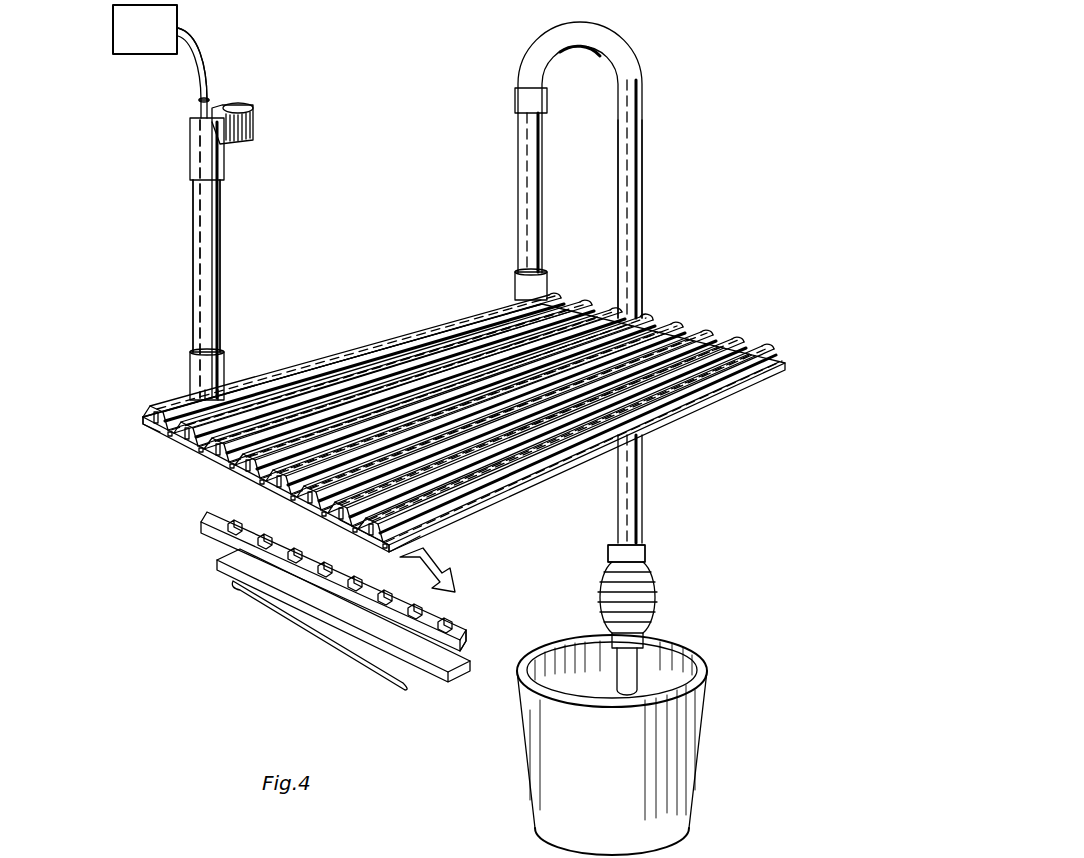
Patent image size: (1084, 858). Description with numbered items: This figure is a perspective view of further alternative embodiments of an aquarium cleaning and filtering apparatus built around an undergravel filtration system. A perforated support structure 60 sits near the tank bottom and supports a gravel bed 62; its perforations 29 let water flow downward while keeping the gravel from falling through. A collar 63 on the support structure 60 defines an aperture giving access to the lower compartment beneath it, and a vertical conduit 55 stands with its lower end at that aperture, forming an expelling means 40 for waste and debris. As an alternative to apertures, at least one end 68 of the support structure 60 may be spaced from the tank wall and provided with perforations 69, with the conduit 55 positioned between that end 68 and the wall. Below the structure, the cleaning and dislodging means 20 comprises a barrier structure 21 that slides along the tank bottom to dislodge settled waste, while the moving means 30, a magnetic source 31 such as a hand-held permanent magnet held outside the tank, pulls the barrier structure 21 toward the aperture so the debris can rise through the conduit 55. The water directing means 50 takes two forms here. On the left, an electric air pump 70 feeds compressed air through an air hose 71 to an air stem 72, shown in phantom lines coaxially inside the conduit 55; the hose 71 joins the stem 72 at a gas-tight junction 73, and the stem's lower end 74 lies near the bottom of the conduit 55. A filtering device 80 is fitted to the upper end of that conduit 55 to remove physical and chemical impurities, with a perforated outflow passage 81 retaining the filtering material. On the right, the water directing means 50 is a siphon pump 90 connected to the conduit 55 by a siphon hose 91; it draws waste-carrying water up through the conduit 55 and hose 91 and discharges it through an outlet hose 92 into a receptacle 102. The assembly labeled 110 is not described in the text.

The cleaning and dislodging means 20 is at (329, 559).
The barrier structure 21 is at (468, 632).
The perforations 29 is at (700, 335).
The moving means 30 is at (228, 648).
The magnetic source 31 is at (342, 633).
The expelling means 40 is at (654, 48).
The water directing means 50 is at (196, 30).
The conduit 55 is at (200, 258).
The perforated support structure 60 is at (464, 397).
The gravel bed 62 is at (260, 521).
The collar 63 is at (192, 370).
The end of the support structure 68 is at (150, 424).
The perforations 69 is at (392, 508).
The electric air pump 70 is at (135, 45).
The air hose 71 is at (207, 67).
The air stem 72 is at (205, 253).
The junction 73 is at (199, 108).
The lower end of air stem 74 is at (225, 372).
The filtering device 80 is at (257, 100).
The perforated outflow passage 81 is at (254, 128).
The siphon pump 90 is at (662, 548).
The siphon hose 91 is at (645, 175).
The outlet hose 92 is at (640, 667).
The receptacle 102 is at (700, 757).
The pipe assembly 110 is at (174, 195).